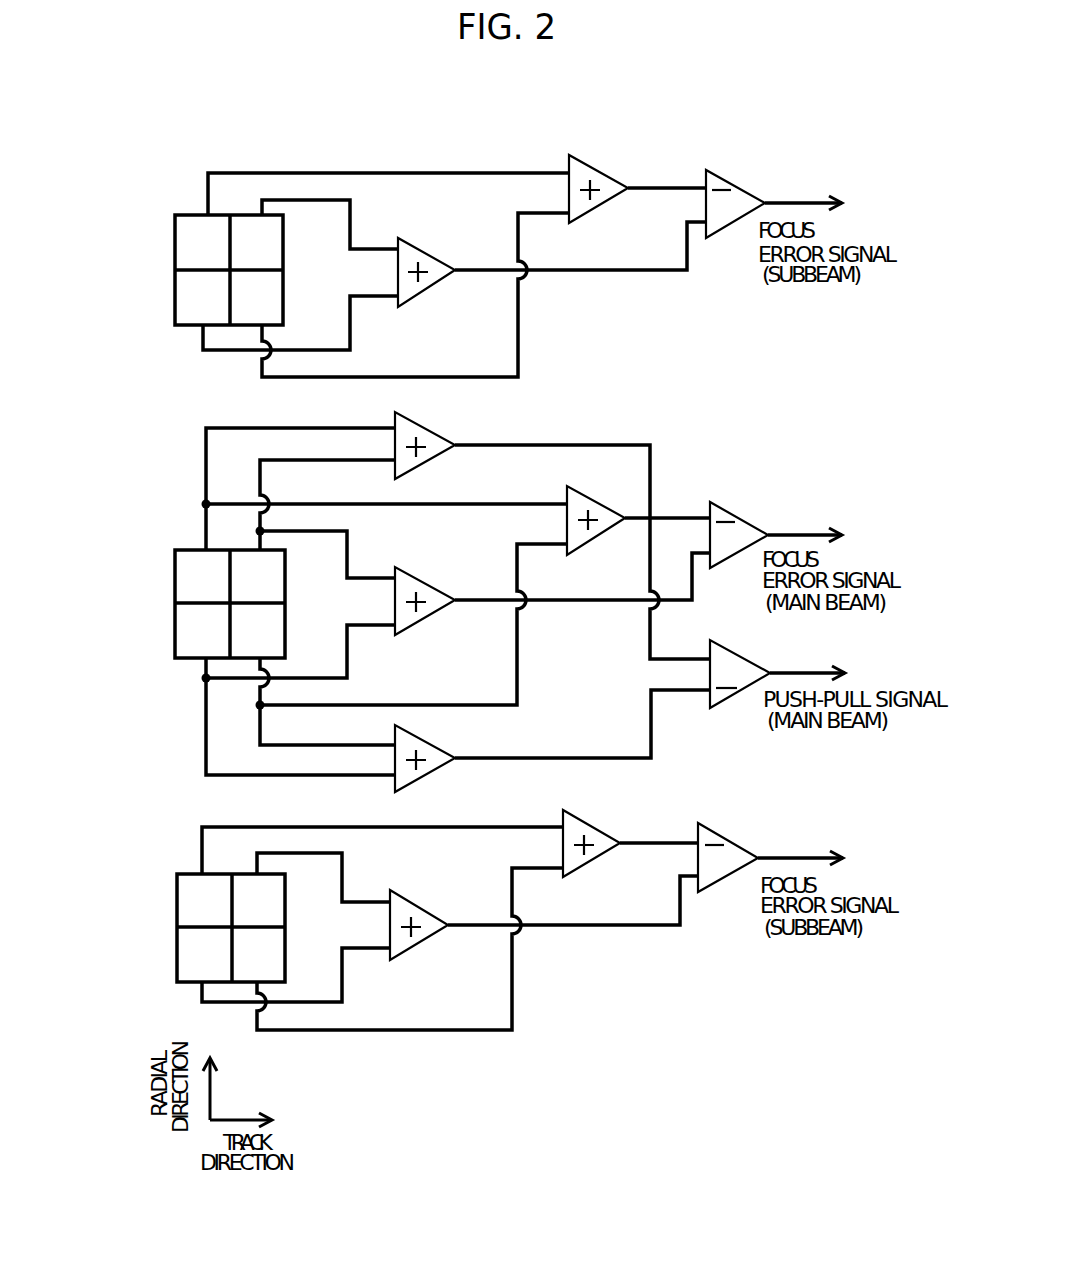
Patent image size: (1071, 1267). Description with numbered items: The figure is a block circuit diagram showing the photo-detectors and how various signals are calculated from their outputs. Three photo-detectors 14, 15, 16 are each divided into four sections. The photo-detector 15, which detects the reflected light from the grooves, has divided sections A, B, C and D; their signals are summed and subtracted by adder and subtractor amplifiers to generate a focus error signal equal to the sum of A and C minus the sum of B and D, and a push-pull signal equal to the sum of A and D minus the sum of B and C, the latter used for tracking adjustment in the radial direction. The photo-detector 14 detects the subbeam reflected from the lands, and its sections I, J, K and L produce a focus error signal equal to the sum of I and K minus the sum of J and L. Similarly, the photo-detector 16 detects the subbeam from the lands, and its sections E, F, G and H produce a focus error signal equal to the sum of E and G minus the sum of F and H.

The photo-detector 14 is at (177, 270).
The photo-detector 15 is at (70, 579).
The photo-detector 16 is at (178, 928).